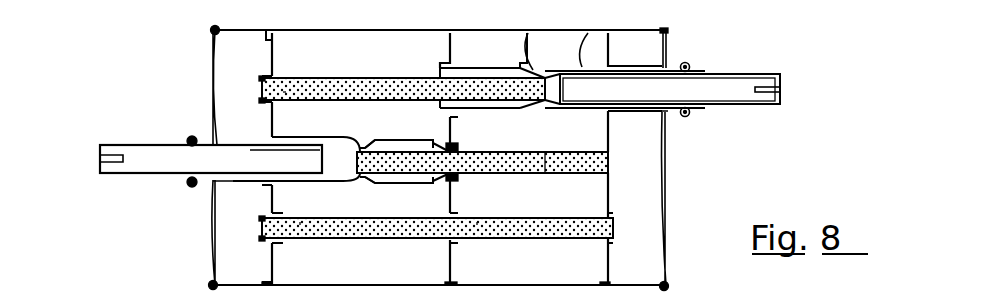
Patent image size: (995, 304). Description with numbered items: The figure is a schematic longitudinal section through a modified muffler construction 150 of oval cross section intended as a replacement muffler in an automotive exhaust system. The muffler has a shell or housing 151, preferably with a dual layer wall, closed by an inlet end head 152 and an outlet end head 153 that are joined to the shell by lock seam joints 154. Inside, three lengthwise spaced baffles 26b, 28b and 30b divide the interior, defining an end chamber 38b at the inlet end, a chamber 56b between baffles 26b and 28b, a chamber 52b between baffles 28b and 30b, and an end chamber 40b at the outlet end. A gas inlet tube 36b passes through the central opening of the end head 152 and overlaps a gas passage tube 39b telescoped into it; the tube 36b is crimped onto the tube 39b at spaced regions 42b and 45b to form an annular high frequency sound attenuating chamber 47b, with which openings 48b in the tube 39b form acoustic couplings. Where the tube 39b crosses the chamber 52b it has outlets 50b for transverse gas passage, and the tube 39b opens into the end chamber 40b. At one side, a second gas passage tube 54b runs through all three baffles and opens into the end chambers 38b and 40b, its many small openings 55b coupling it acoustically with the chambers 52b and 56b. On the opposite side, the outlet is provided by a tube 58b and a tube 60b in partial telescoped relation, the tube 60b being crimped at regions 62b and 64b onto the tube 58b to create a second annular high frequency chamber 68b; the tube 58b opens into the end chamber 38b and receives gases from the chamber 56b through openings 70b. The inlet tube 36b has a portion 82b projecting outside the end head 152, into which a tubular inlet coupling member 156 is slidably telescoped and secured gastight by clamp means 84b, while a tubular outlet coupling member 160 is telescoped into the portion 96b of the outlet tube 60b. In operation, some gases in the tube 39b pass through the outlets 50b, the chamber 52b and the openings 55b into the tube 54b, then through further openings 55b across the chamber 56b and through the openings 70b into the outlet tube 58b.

The baffle 26b is at (266, 30).
The baffle 28b is at (447, 31).
The baffle 30b is at (594, 33).
The gas inlet passage tube 36b is at (327, 137).
The end chamber 38b is at (228, 85).
The gas passage tube 39b is at (535, 153).
The end chamber 40b is at (635, 70).
The crimped region 42b is at (358, 147).
The crimped region 45b is at (447, 180).
The annular high frequency sound attenuating chamber 47b is at (407, 147).
The openings 48b is at (377, 180).
The outlets 50b is at (527, 168).
The chamber 52b is at (569, 63).
The second gas passage tube 54b is at (398, 240).
The small openings 55b is at (303, 223).
The chamber 56b is at (364, 60).
The gas outlet passage tube 58b is at (395, 77).
The gas outlet passage tube 60b is at (605, 32).
The crimped region 62b is at (437, 31).
The crimped region 64b is at (540, 31).
The annular high frequency sound attenuating chamber 68b is at (500, 52).
The openings 70b is at (312, 60).
The projecting portion of inlet tube 82b is at (188, 140).
The clamp means 84b is at (185, 128).
The portion of outlet tube 96b is at (695, 112).
The muffler construction 150 is at (384, 27).
The shell 151 is at (322, 30).
The inlet end head 152 is at (213, 50).
The outlet end head 153 is at (670, 128).
The lock seam joints 154 is at (213, 28).
The tubular inlet coupling member 156 is at (100, 144).
The tubular outlet coupling member 160 is at (768, 75).